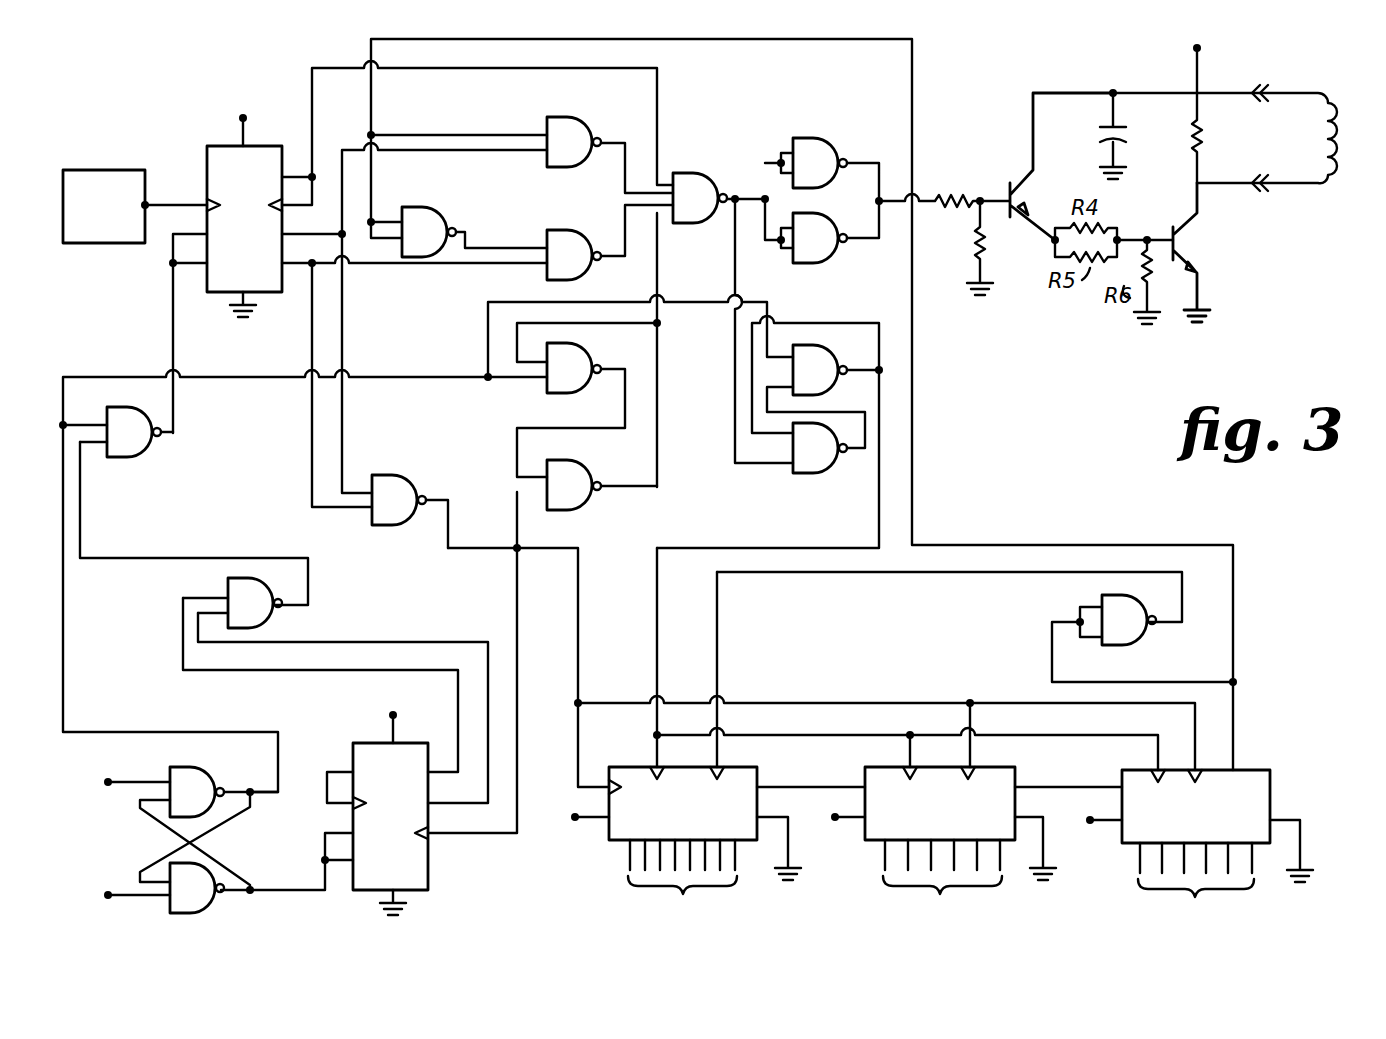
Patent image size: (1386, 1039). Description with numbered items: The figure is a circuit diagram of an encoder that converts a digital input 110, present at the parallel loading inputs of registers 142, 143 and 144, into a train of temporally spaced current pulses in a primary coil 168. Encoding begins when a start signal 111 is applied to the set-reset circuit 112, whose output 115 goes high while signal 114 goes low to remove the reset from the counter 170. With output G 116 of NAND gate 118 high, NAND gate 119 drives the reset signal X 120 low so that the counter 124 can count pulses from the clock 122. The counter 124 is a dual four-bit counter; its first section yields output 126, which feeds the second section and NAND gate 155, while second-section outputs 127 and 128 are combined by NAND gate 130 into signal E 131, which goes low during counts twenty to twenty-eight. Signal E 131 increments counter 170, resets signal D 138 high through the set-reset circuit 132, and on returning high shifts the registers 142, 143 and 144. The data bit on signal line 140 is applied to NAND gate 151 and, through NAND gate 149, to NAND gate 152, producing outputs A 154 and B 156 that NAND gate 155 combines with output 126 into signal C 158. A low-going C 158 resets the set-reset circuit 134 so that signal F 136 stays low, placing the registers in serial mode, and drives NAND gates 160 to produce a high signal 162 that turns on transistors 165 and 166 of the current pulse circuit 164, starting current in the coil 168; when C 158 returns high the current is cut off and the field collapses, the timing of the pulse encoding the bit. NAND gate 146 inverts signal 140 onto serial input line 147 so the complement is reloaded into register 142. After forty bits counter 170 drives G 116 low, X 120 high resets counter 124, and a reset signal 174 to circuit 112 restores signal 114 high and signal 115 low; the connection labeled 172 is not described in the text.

The digital input 110 is at (941, 878).
The start signal 111 is at (108, 782).
The set-reset circuit 112 is at (205, 843).
The reset signal 114 is at (268, 892).
The output signal 115 is at (61, 426).
The output G 116 is at (185, 558).
The NAND gate 118 is at (268, 618).
The NAND gate 119 is at (138, 454).
The reset signal X 120 is at (173, 345).
The clock 122 is at (120, 170).
The counter 124 is at (228, 146).
The output Q3 of first counter 126 is at (344, 67).
The output Q1 of second counter 127 is at (342, 358).
The output Q2 of second counter 128 is at (310, 358).
The NAND gate 130 is at (395, 475).
The signal E 131 is at (522, 548).
The set-reset circuit 132 is at (625, 395).
The set-reset circuit 134 is at (850, 392).
The signal F 136 is at (881, 373).
The signal D 138 is at (660, 325).
The signal line 140 is at (455, 39).
The register 142 is at (701, 714).
The register 143 is at (886, 788).
The register 144 is at (1182, 826).
The NAND gate 146 is at (1142, 644).
The serial input line 147 is at (950, 574).
The NAND gate 149 is at (424, 207).
The NAND gate 151 is at (577, 116).
The NAND gate 152 is at (579, 229).
The output A 154 is at (605, 138).
The NAND gate 155 is at (706, 224).
The output B 156 is at (607, 262).
The signal C 158 is at (738, 196).
The NAND gates 160 is at (852, 162).
The output signal 162 is at (980, 200).
The current pulse circuit 164 is at (1095, 88).
The transistor 165 is at (1025, 205).
The transistor 166 is at (1178, 248).
The primary coil 168 is at (1332, 146).
The counter 170 is at (360, 743).
The lines 172 is at (310, 657).
The reset signal 174 is at (108, 895).